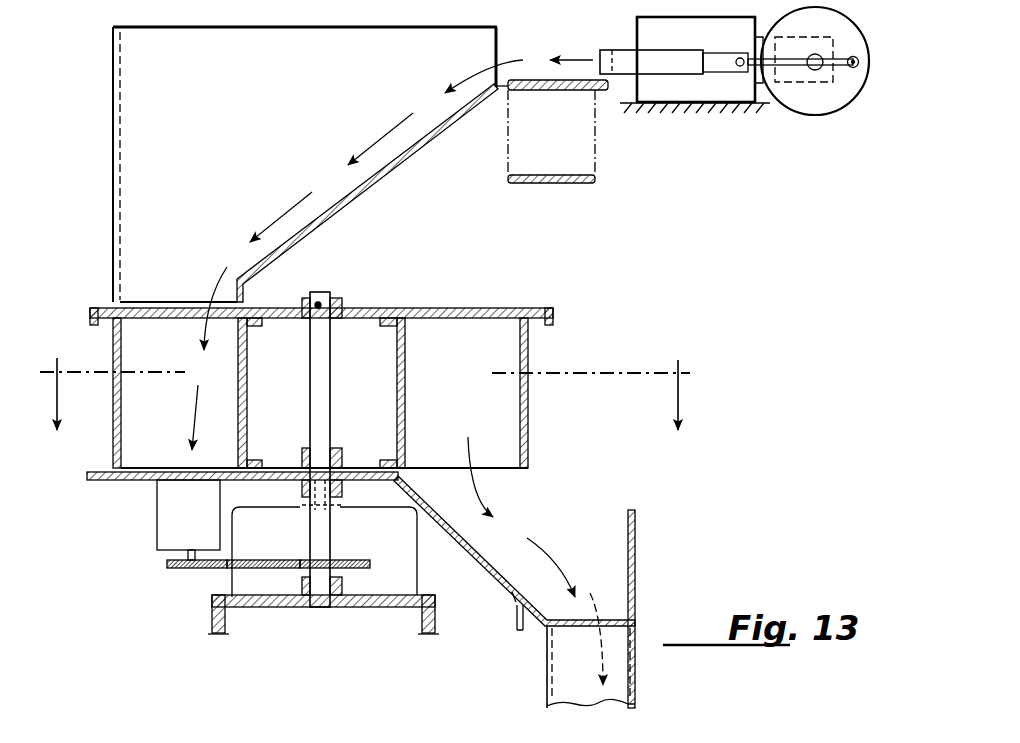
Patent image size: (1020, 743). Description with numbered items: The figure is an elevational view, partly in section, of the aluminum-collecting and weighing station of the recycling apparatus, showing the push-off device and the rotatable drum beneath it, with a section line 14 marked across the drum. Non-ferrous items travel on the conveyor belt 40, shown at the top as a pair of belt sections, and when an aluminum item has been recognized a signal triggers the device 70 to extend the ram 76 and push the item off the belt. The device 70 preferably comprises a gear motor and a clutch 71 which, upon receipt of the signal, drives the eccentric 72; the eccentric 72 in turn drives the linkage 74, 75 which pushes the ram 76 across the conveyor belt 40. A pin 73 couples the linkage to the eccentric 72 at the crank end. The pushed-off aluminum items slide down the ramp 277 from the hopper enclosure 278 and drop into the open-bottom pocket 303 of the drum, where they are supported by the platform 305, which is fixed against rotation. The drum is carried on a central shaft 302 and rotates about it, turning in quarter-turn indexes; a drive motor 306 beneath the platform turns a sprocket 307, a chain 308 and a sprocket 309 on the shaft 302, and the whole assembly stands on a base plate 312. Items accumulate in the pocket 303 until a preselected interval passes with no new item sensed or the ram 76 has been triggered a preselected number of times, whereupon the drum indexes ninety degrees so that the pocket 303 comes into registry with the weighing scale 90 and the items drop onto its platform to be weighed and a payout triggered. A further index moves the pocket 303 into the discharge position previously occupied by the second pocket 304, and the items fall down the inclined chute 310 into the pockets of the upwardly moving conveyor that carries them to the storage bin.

The section line 14- 14 is at (367, 380).
The conveyor belt 40 is at (536, 79).
The device 70 is at (684, 93).
The clutch 71 is at (820, 84).
The eccentric 72 is at (850, 42).
The crank pin 73 is at (856, 68).
The linkage 74 is at (793, 62).
The linkage 75 is at (723, 68).
The ram 76 is at (607, 48).
The weighing scale 90 is at (403, 540).
The ramp 277 is at (377, 183).
The hopper 278 is at (193, 275).
The shaft 302 is at (322, 420).
The pocket 303 is at (135, 432).
The pocket 304 is at (500, 428).
The platform 305 is at (120, 481).
The motor 306 is at (172, 533).
The sprocket 307 is at (190, 571).
The chain 308 is at (254, 559).
The sprocket 309 is at (349, 559).
The inclined chute 310 is at (490, 580).
The base plate 312 is at (271, 607).